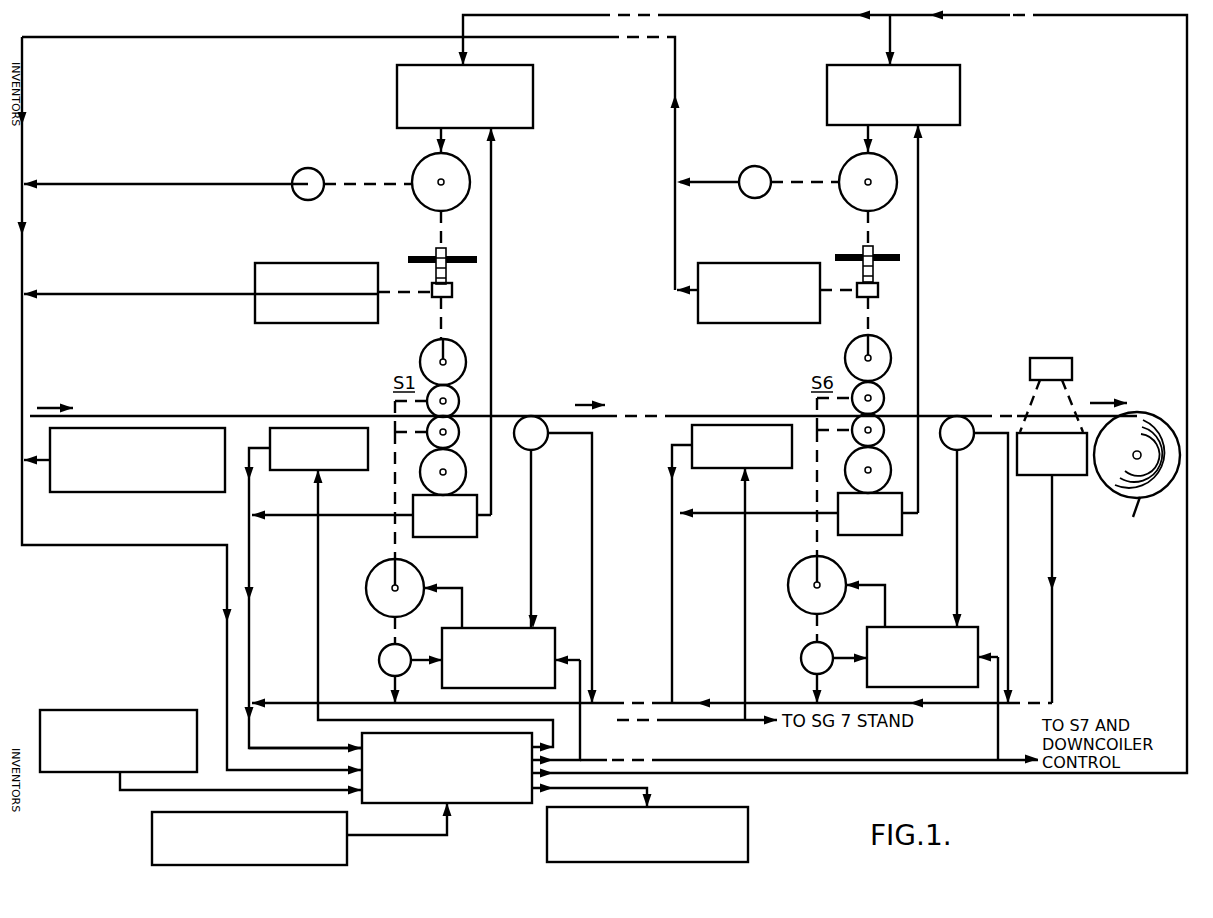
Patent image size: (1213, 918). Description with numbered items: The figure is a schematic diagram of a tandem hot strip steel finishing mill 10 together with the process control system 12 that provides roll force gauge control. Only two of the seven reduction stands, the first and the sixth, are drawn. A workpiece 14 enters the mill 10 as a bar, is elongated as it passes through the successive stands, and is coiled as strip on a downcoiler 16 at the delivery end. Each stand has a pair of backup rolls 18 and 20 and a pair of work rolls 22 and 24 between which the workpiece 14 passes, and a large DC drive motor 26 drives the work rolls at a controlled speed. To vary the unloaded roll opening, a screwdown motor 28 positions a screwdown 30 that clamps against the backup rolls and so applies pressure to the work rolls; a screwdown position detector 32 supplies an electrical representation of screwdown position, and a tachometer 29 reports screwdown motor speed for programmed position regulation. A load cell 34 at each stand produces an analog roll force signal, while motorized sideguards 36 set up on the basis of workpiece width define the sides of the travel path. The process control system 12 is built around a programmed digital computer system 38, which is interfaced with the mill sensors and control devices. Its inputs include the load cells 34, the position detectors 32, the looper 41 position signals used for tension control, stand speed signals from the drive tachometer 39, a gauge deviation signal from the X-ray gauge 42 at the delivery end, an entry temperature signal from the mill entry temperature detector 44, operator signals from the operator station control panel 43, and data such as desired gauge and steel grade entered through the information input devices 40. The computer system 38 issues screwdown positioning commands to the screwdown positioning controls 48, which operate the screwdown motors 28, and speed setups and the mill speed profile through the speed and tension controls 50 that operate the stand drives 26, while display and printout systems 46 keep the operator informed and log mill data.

The tandem hot strip steel finishing mill 10 is at (1076, 164).
The process control system 12 is at (504, 845).
The workpiece 14 is at (347, 416).
The downcoiler 16 is at (1140, 420).
The backup roll 18 is at (451, 348).
The backup roll 20 is at (461, 474).
The work roll 22 is at (459, 447).
The work roll 24 is at (462, 408).
The DC drive motor 26 is at (418, 575).
The screwdown motor 28 is at (414, 178).
The tachometer 29 is at (321, 180).
The screwdown 30 is at (436, 252).
The screwdown position detector 32 is at (292, 262).
The load cell 34 is at (479, 532).
The sideguards 36 is at (300, 472).
The digital computer system 38 is at (360, 744).
The drive motor tachometer 39 is at (380, 661).
The information input devices 40 is at (81, 710).
The looper 41 is at (523, 450).
The X-ray gauge 42 is at (1041, 477).
The operator station control panel 43 is at (152, 822).
The mill entry temperature detector 44 is at (99, 492).
The display and printout systems 46 is at (750, 818).
The screwdown positioning control 48 is at (534, 104).
The speed and tension control 50 is at (556, 628).